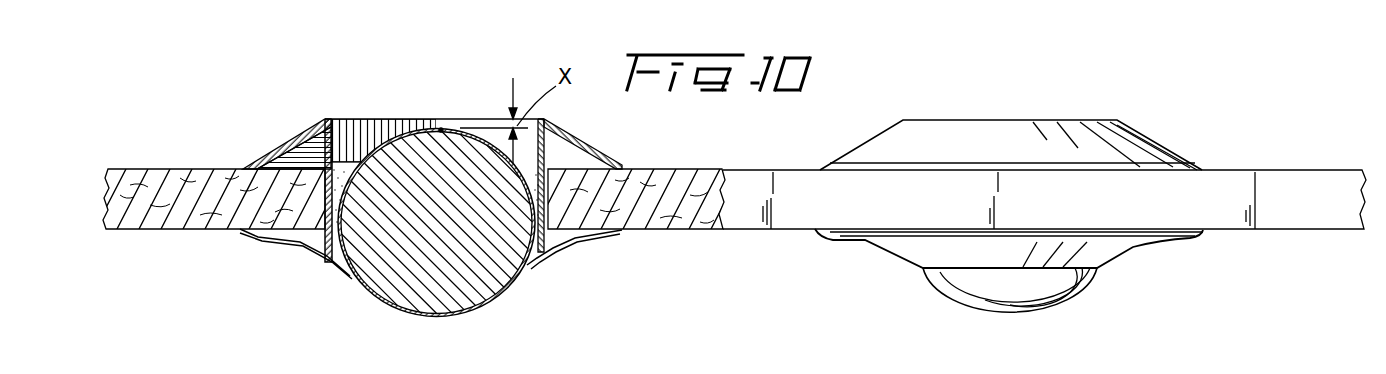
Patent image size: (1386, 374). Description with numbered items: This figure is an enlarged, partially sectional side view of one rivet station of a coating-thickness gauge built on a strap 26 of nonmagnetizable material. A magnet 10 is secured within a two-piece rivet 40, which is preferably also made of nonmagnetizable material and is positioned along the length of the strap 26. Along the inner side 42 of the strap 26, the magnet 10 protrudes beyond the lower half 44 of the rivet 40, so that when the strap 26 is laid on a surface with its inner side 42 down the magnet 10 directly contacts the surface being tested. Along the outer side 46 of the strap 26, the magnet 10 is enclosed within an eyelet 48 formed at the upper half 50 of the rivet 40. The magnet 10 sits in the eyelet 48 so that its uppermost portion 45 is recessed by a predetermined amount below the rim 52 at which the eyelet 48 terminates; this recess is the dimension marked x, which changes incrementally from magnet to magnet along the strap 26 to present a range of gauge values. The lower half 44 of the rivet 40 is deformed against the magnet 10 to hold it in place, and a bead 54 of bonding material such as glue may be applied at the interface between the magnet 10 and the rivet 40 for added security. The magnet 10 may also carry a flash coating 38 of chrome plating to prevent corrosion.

The magnet 10 is at (402, 287).
The strap 26 is at (760, 177).
The flash coating 38 is at (492, 302).
The two-piece rivet 40 is at (289, 142).
The inner side 42 is at (768, 231).
The lower half 44 is at (563, 243).
The uppermost portion 45 is at (443, 128).
The outer side 46 is at (664, 171).
The eyelet 48 is at (385, 119).
The upper half 50 is at (583, 144).
The rim 52 is at (541, 122).
The bead of bonding material 54 is at (347, 160).